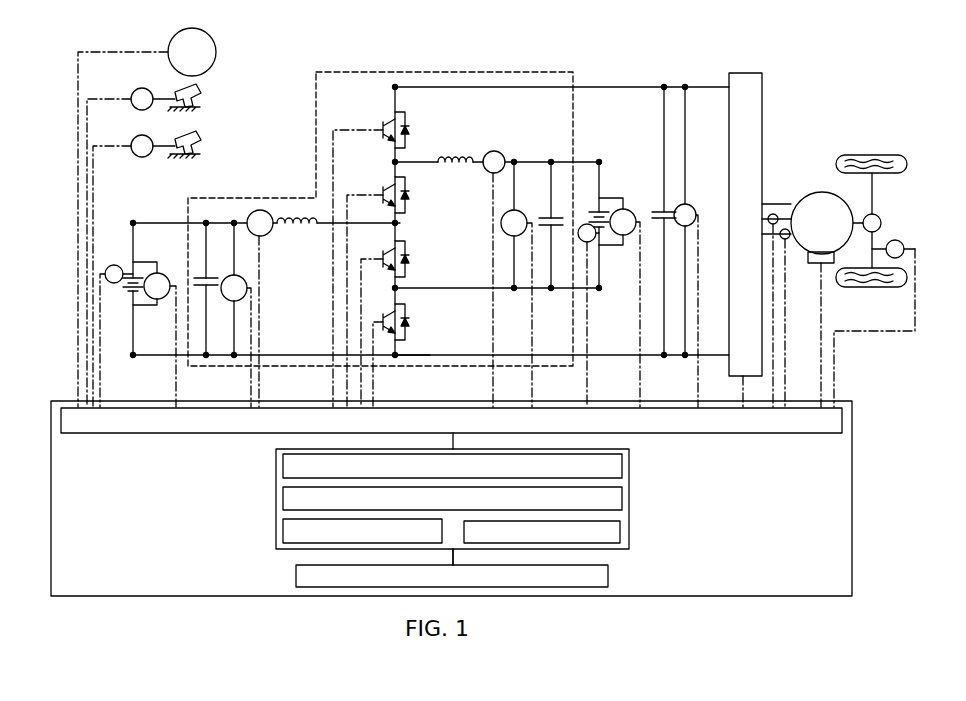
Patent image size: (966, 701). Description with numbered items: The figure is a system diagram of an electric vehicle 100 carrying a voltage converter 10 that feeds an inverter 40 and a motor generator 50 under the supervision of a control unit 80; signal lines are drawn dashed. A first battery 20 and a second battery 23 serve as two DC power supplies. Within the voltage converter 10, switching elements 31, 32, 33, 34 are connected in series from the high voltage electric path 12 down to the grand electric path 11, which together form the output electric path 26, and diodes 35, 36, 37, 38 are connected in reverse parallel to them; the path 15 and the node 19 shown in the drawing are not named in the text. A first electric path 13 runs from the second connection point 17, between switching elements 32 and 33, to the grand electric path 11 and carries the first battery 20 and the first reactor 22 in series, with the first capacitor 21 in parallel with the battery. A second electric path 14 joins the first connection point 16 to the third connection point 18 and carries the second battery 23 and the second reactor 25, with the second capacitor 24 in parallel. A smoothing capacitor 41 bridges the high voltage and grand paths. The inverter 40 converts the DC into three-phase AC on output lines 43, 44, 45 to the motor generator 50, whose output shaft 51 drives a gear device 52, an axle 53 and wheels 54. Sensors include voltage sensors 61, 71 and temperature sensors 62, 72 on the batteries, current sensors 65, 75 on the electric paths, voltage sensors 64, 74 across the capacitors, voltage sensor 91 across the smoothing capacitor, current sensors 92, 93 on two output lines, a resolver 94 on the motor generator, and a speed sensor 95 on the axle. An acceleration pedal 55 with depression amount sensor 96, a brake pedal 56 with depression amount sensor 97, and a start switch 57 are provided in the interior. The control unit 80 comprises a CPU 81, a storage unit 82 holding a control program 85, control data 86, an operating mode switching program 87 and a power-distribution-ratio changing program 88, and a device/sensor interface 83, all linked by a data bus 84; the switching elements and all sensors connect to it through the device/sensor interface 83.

The voltage converter 10 is at (556, 72).
The grand electric path 11 is at (425, 366).
The high voltage electric path 12 is at (486, 72).
The first electric path 13 is at (160, 223).
The second electric path 14 is at (566, 160).
The high voltage line 15 is at (395, 85).
The first connection point 16 is at (393, 164).
The second connection point 17 is at (397, 224).
The third connection point 18 is at (398, 287).
The low voltage node 19 is at (395, 357).
The first battery 20 is at (128, 292).
The first capacitor 21 is at (208, 276).
The first reactor 22 is at (298, 218).
The second battery 23 is at (604, 245).
The second capacitor 24 is at (549, 214).
The second reactor 25 is at (462, 158).
The output electric path 26 is at (631, 86).
The switching element 31 is at (381, 134).
The switching element 32 is at (381, 199).
The switching element 33 is at (380, 263).
The switching element 34 is at (381, 324).
The diode 35 is at (408, 128).
The diode 36 is at (408, 196).
The diode 37 is at (408, 259).
The diode 38 is at (408, 320).
The inverter 40 is at (745, 72).
The smoothing capacitor 41 is at (660, 198).
The output line 43 is at (766, 203).
The output line 44 is at (781, 214).
The output line 45 is at (766, 240).
The motor generator 50 is at (823, 192).
The output shaft 51 is at (860, 218).
The gear device 52 is at (882, 220).
The axle 53 is at (874, 190).
The wheels 54 is at (880, 155).
The acceleration pedal 55 is at (202, 96).
The brake pedal 56 is at (202, 143).
The start switch 57 is at (216, 48).
The voltage sensor 61 is at (160, 273).
The temperature sensor 62 is at (114, 265).
The voltage sensor 64 is at (232, 301).
The current sensor 65 is at (260, 210).
The voltage sensor 71 is at (624, 208).
The temperature sensor 72 is at (586, 224).
The voltage sensor 74 is at (512, 237).
The current sensor 75 is at (503, 155).
The control unit 80 is at (852, 438).
The CPU 81 is at (608, 577).
The storage unit 82 is at (630, 512).
The device/sensor interface 83 is at (842, 420).
The data bus 84 is at (455, 556).
The control program 85 is at (283, 528).
The control data 86 is at (610, 536).
The operating mode switching program 87 is at (610, 500).
The power-distribution-ratio changing program 88 is at (610, 468).
The voltage sensor 91 is at (692, 206).
The current sensor 92 is at (774, 213).
The current sensor 93 is at (786, 240).
The resolver 94 is at (828, 265).
The speed sensor 95 is at (900, 242).
The depression amount sensor 96 is at (134, 93).
The depression amount sensor 97 is at (136, 154).
The electric vehicle 100 is at (833, 82).